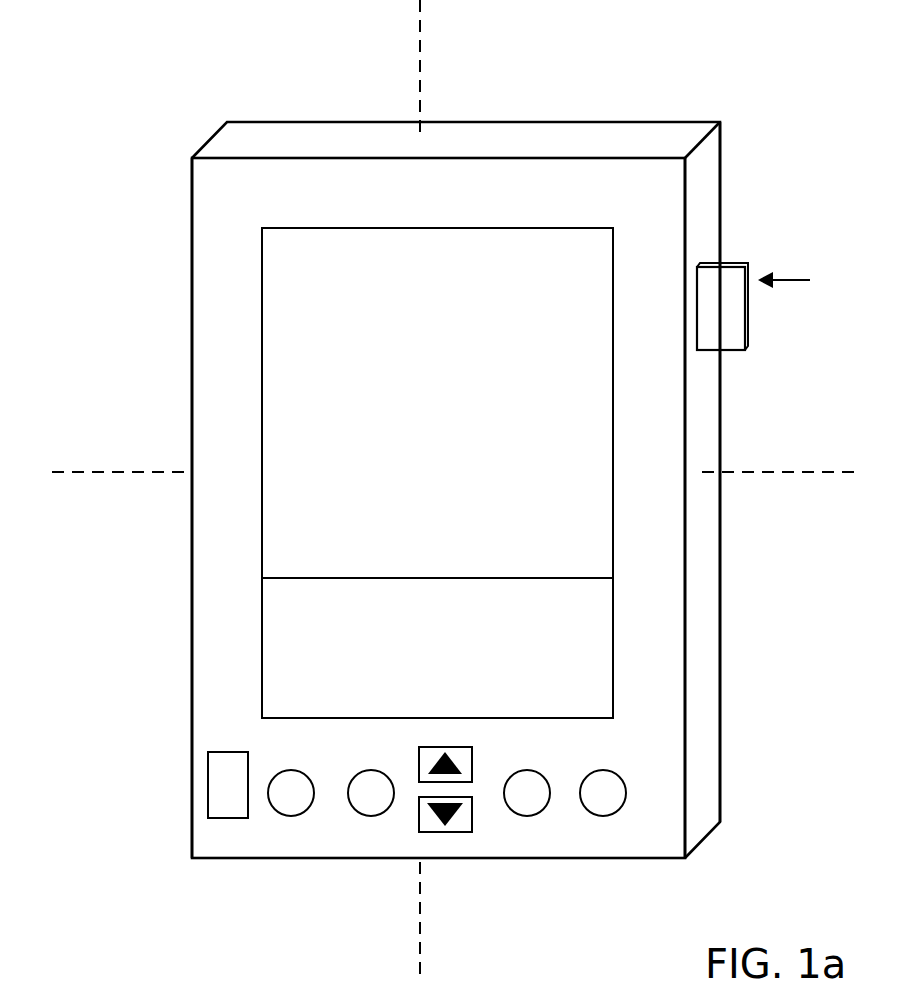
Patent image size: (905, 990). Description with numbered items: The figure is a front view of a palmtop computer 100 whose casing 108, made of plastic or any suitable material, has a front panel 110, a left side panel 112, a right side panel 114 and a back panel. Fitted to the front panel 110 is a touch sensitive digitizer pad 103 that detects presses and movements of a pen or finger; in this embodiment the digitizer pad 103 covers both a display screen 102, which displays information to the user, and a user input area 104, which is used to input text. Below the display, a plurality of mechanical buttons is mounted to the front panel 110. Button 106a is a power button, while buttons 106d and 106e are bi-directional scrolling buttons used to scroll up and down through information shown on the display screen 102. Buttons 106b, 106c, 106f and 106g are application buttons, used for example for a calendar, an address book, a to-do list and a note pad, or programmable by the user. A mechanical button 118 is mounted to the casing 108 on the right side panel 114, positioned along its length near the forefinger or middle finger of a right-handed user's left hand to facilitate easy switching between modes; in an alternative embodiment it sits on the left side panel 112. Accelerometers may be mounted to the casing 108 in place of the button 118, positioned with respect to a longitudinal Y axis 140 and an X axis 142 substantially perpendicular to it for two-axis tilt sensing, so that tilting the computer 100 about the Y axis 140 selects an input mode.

The palmtop computer 100 is at (639, 69).
The display screen 102 is at (303, 373).
The touch sensitive digitizer pad 103 is at (568, 437).
The user input area 104 is at (305, 657).
The power button 106a is at (217, 808).
The application button 106b is at (283, 810).
The application button 106c is at (352, 812).
The bi-directional scrolling button 106d is at (422, 782).
The bi-directional scrolling button 106e is at (449, 832).
The application button 106f is at (523, 817).
The application button 106g is at (601, 817).
The casing 108 is at (225, 122).
The front panel 110 is at (202, 508).
The left side panel 112 is at (215, 250).
The right side panel 114 is at (705, 385).
The mechanical button 118 is at (740, 340).
The longitudinal Y axis 140 is at (421, 33).
The X axis 142 is at (785, 474).